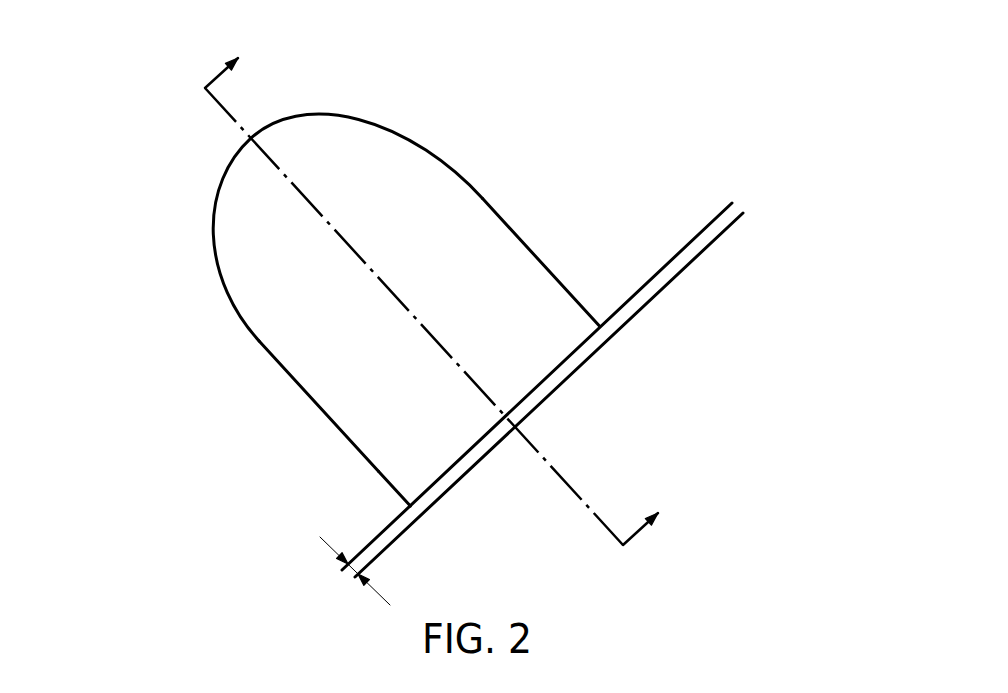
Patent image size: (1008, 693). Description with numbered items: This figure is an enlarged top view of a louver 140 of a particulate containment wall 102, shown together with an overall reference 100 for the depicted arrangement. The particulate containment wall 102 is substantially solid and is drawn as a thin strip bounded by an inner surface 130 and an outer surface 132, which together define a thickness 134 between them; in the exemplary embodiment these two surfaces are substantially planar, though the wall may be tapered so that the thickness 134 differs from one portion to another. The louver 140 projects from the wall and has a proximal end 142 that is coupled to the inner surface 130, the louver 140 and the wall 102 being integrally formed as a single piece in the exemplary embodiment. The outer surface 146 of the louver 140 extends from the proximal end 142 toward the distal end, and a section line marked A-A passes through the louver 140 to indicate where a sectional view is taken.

The device 100 is at (623, 70).
The particulate containment wall 102 is at (738, 203).
The inner surface 130 is at (660, 270).
The outer surface 132 is at (668, 283).
The thickness 134 is at (353, 572).
The louver 140 is at (187, 258).
The proximal end 142 is at (407, 507).
The outer surface 146 is at (385, 158).